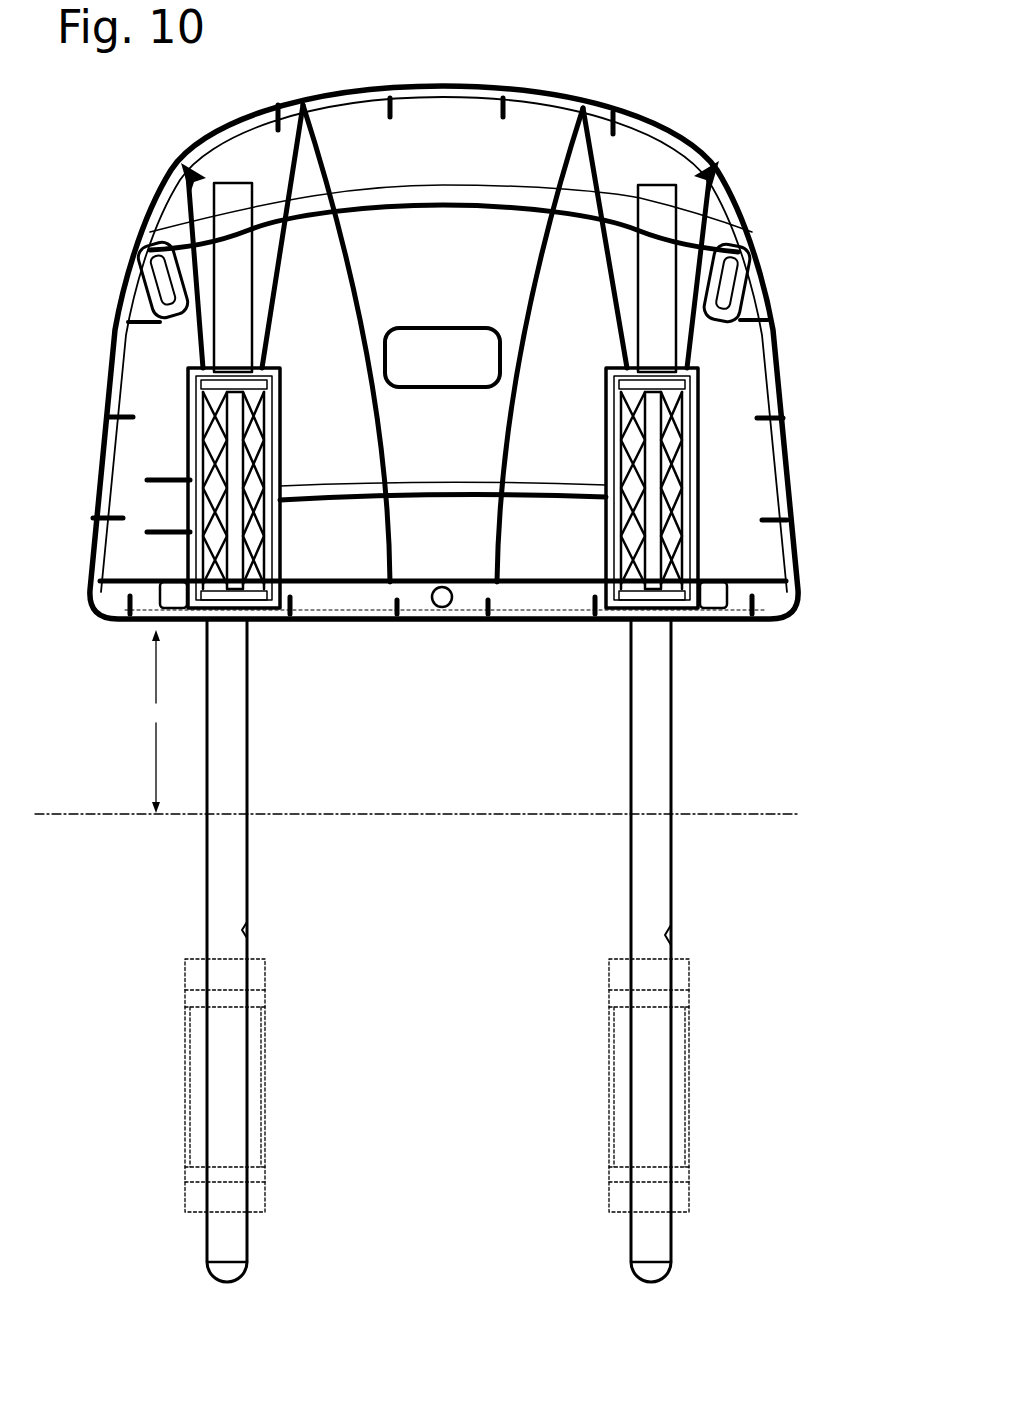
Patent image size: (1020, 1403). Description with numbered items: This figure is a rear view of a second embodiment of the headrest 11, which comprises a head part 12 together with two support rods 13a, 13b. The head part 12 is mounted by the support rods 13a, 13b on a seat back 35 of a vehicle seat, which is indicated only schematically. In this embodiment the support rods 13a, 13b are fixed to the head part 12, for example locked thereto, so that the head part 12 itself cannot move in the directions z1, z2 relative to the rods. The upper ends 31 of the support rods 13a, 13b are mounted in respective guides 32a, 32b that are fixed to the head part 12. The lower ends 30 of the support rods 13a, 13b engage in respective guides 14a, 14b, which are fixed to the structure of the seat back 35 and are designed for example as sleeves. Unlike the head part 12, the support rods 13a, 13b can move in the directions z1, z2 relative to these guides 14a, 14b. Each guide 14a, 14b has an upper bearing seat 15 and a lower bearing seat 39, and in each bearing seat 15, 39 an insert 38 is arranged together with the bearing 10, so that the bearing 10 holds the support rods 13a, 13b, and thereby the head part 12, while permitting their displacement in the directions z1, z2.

The bearing 10 is at (193, 994).
The headrest 11 is at (694, 672).
The head part 12 is at (735, 220).
The support rod 13a is at (223, 885).
The support rod 13b is at (655, 880).
The guide 14a is at (193, 1082).
The guide 14b is at (622, 1091).
The upper bearing seat 15 is at (282, 1000).
The lower end 30 is at (210, 1227).
The upper end 31 is at (753, 262).
The guide 32a is at (187, 473).
The guide 32b is at (705, 486).
The seat back 35 is at (380, 813).
The insert 38 is at (217, 998).
The lower bearing seat 39 is at (280, 1180).
The direction z1 is at (168, 666).
The direction z2 is at (168, 768).